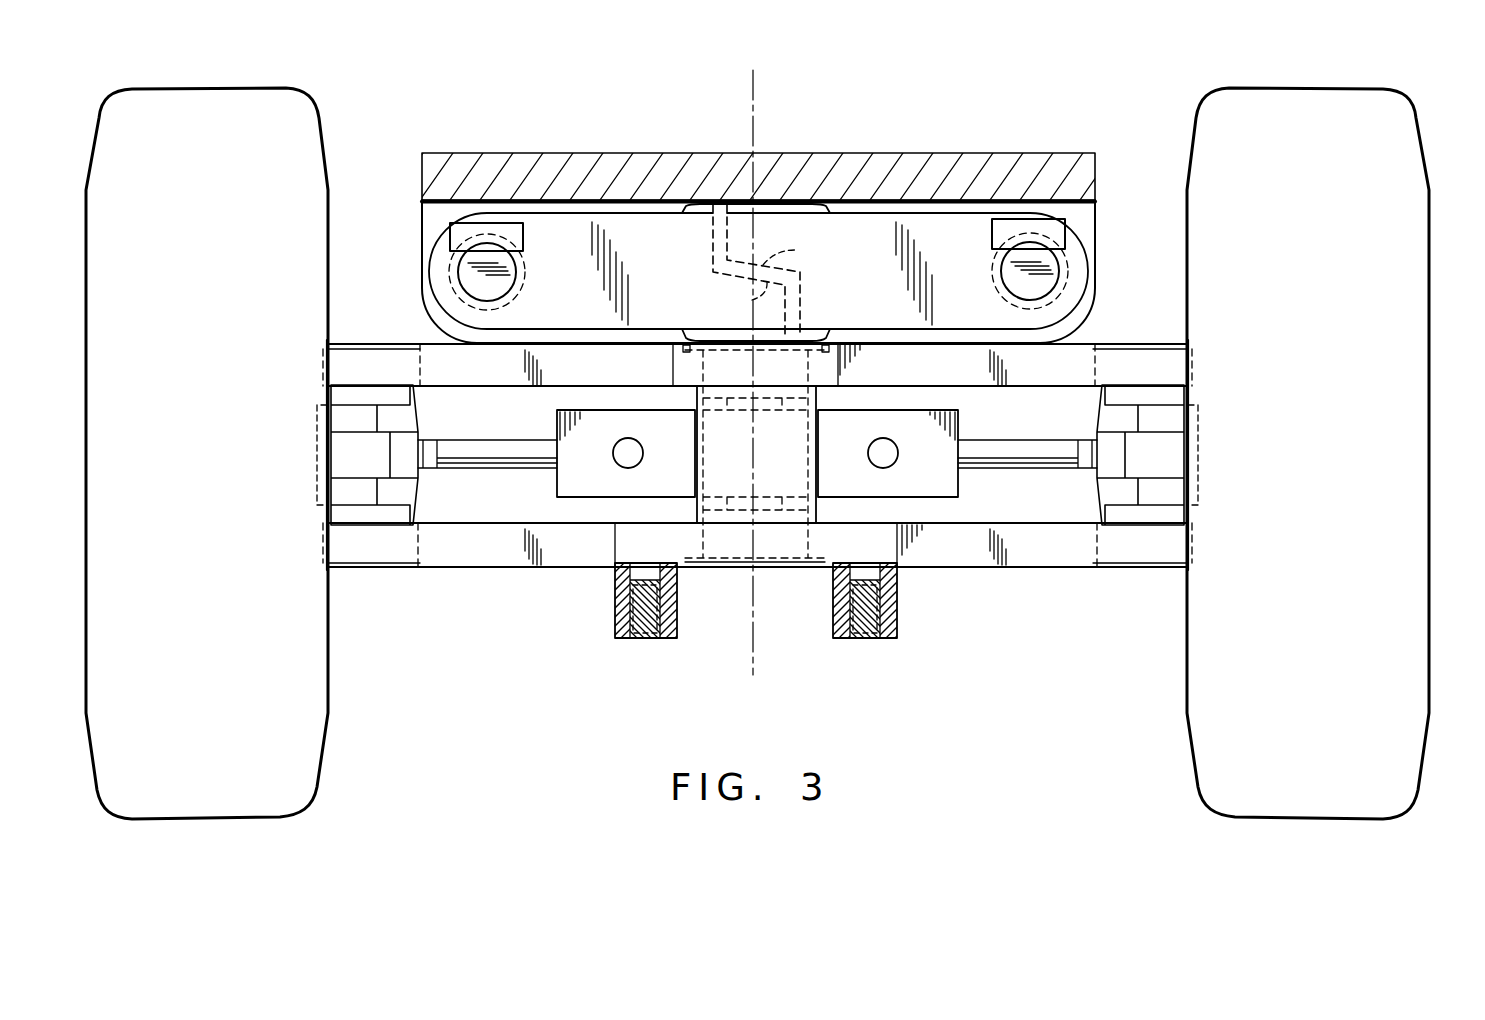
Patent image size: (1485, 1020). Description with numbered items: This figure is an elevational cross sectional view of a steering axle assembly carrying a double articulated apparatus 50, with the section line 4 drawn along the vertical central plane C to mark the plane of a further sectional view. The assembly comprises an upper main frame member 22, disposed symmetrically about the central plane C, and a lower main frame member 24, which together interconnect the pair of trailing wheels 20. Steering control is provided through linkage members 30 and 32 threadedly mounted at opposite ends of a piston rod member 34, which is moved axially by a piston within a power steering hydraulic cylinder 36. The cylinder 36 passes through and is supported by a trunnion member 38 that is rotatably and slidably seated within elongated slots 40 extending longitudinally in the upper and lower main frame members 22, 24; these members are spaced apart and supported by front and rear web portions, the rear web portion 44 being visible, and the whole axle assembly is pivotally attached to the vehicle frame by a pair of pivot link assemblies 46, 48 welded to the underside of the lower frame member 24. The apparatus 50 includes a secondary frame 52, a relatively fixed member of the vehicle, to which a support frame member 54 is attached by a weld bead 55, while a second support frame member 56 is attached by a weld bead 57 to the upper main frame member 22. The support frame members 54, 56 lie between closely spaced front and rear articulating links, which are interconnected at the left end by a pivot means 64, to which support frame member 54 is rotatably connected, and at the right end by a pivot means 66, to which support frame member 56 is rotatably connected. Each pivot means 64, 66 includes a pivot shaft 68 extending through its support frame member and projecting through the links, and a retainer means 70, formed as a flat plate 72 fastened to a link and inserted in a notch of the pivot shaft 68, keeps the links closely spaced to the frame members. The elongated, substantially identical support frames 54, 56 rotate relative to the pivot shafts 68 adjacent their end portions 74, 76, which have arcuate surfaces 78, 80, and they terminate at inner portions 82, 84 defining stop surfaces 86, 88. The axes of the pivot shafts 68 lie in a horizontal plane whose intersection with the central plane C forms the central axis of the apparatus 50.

The section line 4- 4 is at (686, 77).
The trailing wheels 20 is at (318, 707).
The upper main frame member 22 is at (1052, 387).
The lower main frame member 24 is at (1075, 567).
The linkage member 30 is at (318, 470).
The linkage member 32 is at (1198, 463).
The piston rod member 34 is at (490, 468).
The power steering hydraulic cylinder 36 is at (736, 445).
The trunnion member 38 is at (772, 412).
The elongated slots 40 is at (820, 553).
The rear web portion 44 is at (695, 447).
The pivot link assembly 46 is at (611, 598).
The pivot link assembly 48 is at (901, 600).
The double articulated apparatus 50 is at (772, 240).
The secondary frame 52 is at (573, 153).
The support frame member 54 is at (426, 212).
The weld bead 55 is at (641, 207).
The support frame member 56 is at (1088, 212).
The weld bead 57 is at (952, 345).
The pivot means 64 is at (449, 272).
The pivot means 66 is at (1087, 266).
The pivot shaft 68 is at (519, 280).
The retainer means 70 is at (444, 240).
The flat plate 72 is at (525, 238).
The end portion 74 is at (417, 301).
The end portion 76 is at (1103, 287).
The arcuate surface 78 is at (437, 337).
The arcuate surface 80 is at (1082, 224).
The inner portion 82 is at (719, 278).
The inner portion 84 is at (806, 247).
The stop surface 86 is at (747, 298).
The stop surface 88 is at (797, 253).
The vertical central plane C is at (756, 237).